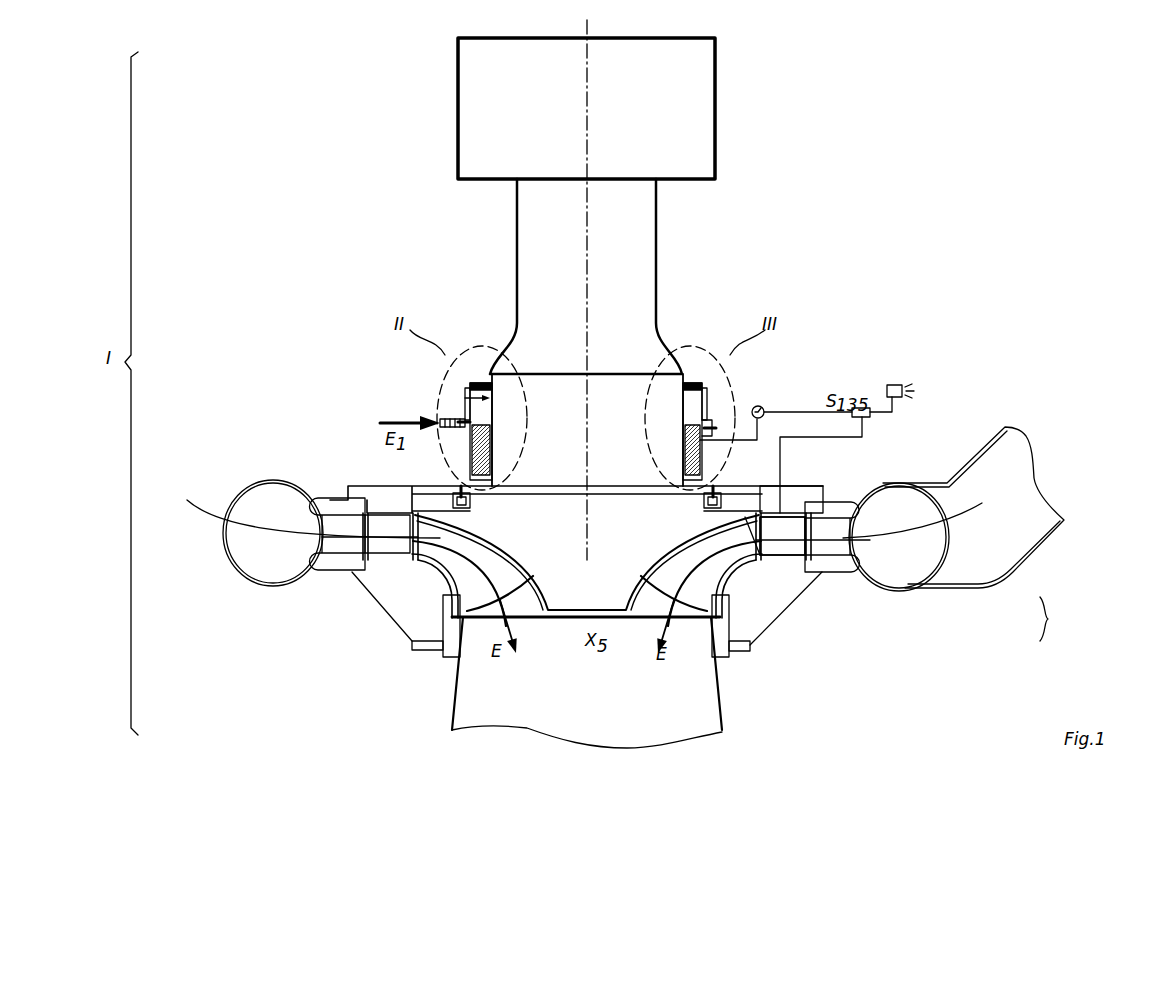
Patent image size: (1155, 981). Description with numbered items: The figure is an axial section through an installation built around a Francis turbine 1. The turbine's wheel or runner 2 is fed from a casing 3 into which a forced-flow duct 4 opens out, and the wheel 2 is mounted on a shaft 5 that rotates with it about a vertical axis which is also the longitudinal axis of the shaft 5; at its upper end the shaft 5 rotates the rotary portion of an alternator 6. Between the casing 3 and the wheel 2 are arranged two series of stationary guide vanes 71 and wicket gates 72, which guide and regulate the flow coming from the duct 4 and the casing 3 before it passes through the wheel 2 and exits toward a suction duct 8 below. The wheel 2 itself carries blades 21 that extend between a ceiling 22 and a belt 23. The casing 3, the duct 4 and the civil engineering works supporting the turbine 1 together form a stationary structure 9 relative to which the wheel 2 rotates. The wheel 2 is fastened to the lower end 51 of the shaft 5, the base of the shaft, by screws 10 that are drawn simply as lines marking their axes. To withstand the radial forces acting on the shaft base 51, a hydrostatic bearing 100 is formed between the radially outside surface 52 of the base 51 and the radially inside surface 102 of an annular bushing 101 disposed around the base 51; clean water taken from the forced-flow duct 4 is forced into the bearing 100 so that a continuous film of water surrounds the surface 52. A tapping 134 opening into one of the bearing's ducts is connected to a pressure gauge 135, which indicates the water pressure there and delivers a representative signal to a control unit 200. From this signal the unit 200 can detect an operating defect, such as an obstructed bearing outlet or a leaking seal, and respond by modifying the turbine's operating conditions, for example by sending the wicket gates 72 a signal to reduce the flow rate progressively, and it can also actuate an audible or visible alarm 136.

The Francis turbine 1 is at (326, 259).
The wheel 2 is at (567, 593).
The casing 3 is at (887, 573).
The forced-flow duct 4 is at (1005, 558).
The shaft 5 is at (640, 352).
The alternator 6 is at (586, 108).
The suction duct 8 is at (663, 727).
The stationary structure 9 is at (953, 535).
The screws 10 is at (520, 490).
The blades 21 is at (452, 562).
The ceiling 22 is at (443, 603).
The belt 23 is at (452, 562).
The lower end of the shaft 51 is at (565, 374).
The radially outside surface 52 is at (465, 398).
The stationary guide vanes 71 is at (822, 548).
The wicket gates 72 is at (780, 552).
The hydrostatic bearing 100 is at (626, 412).
The bushing 101 is at (470, 452).
The radially inside surface 102 is at (498, 465).
The tapping 134 is at (736, 440).
The pressure gauge 135 is at (762, 405).
The alarm 136 is at (898, 380).
The control unit 200 is at (865, 420).